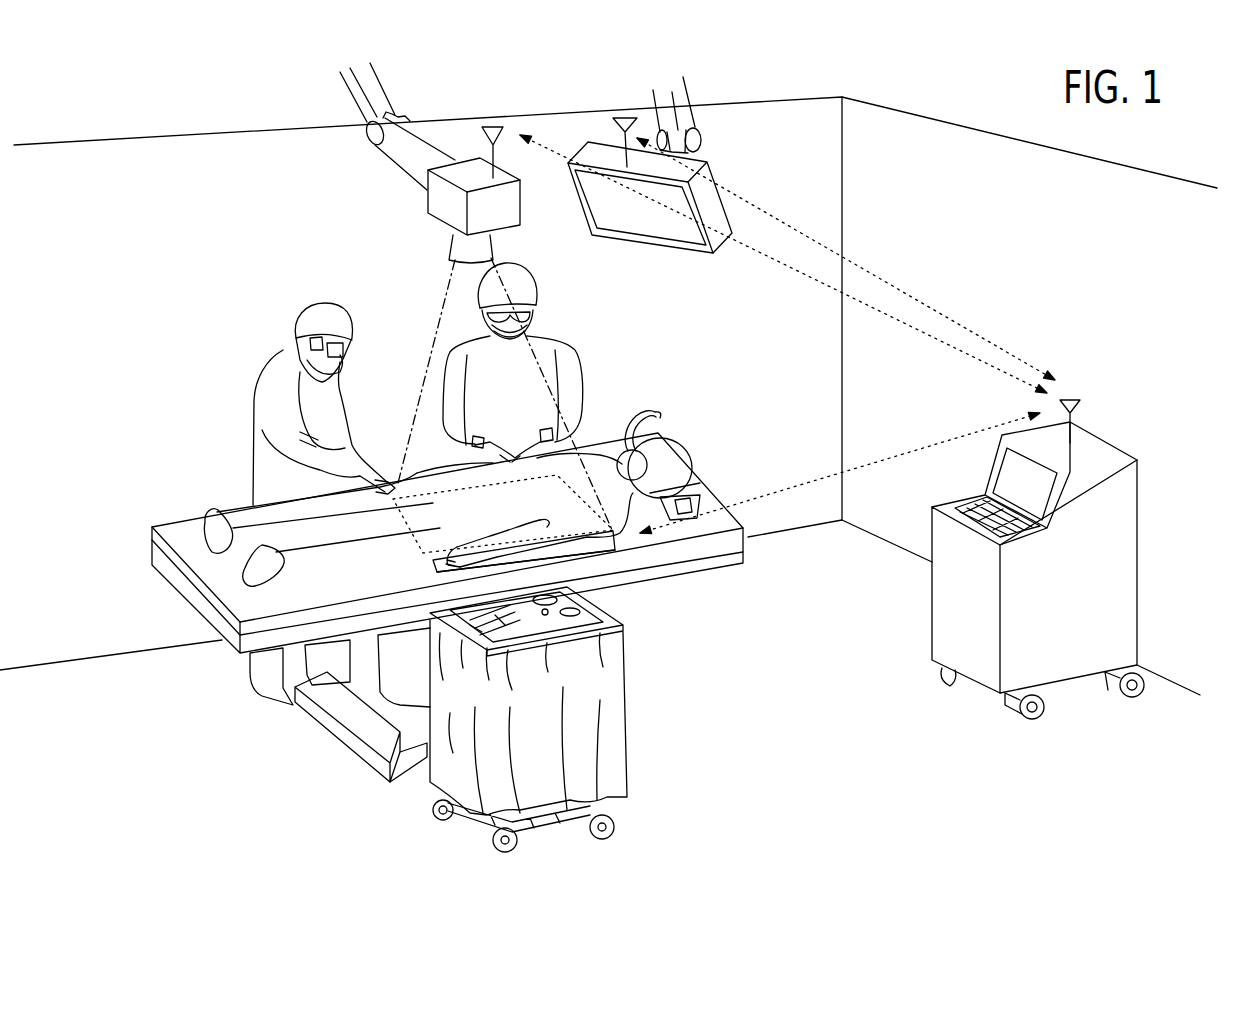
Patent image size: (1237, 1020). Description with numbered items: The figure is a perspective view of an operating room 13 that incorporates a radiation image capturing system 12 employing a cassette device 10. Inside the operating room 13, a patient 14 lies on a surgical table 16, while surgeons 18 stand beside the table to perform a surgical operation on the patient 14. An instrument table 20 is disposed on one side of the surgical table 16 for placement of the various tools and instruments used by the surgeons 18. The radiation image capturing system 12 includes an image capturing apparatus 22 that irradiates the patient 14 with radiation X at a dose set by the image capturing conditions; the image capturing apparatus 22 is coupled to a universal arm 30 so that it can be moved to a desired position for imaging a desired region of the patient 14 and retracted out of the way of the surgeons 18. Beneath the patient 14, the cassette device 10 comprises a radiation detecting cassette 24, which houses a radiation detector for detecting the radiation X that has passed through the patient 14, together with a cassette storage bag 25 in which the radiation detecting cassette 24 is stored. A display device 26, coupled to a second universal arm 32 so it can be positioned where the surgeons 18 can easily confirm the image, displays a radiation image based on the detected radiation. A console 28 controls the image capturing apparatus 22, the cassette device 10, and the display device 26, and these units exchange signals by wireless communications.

The cassette device 10 is at (597, 562).
The radiation image capturing system 12 is at (763, 371).
The operating room 13 is at (823, 171).
The patient 14 is at (240, 508).
The surgical table 16 is at (178, 532).
The surgeons 18 is at (550, 343).
The instrument table 20 is at (575, 677).
The image capturing apparatus 22 is at (418, 210).
The radiation detecting cassette 24 is at (440, 573).
The cassette storage bag 25 is at (503, 514).
The display device 26 is at (720, 182).
The console 28 is at (940, 621).
The universal arm 30 is at (374, 92).
The second universal arm 32 is at (682, 96).